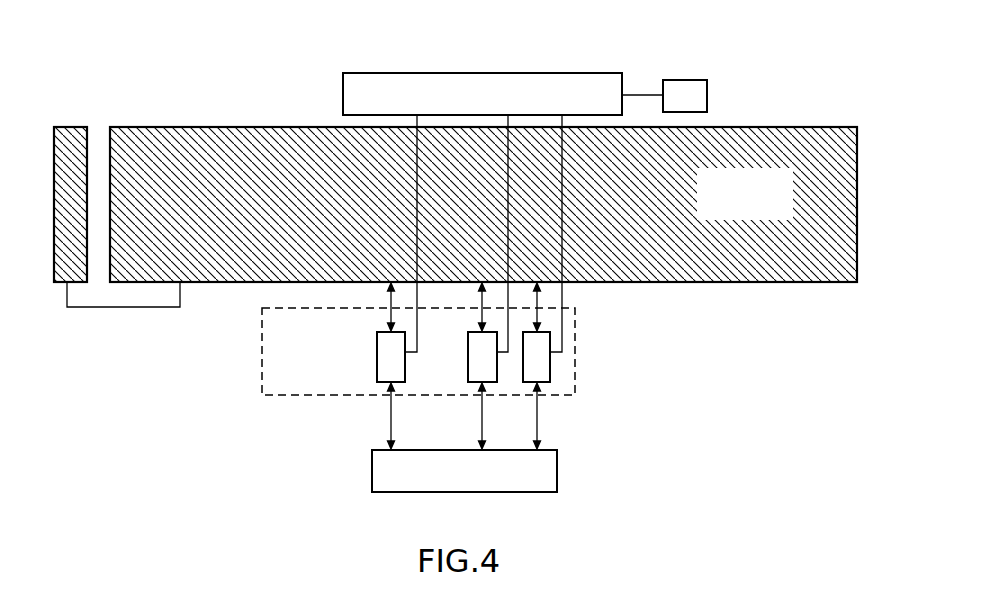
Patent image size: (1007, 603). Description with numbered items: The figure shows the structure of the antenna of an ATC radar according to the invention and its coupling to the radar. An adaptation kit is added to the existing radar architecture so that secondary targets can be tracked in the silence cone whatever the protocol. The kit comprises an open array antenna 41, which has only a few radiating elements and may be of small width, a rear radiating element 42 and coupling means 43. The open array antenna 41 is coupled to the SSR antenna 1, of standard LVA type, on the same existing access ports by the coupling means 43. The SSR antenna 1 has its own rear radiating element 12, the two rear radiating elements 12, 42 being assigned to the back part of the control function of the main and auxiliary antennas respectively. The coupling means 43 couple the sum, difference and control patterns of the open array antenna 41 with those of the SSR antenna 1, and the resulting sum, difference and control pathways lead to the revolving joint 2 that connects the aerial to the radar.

The SSR antenna 1 is at (786, 283).
The rear radiating element 12 is at (54, 284).
The open array antenna 41 is at (510, 73).
The rear radiating element 42 is at (688, 80).
The coupling means 43 is at (575, 392).
The revolving joint 2 is at (557, 480).